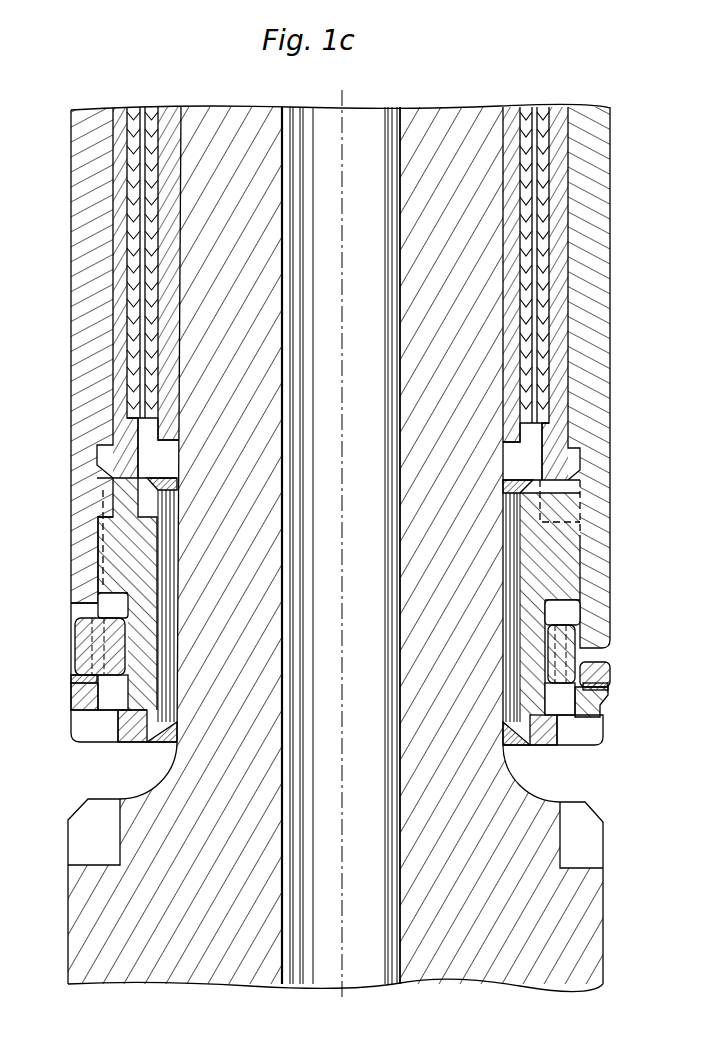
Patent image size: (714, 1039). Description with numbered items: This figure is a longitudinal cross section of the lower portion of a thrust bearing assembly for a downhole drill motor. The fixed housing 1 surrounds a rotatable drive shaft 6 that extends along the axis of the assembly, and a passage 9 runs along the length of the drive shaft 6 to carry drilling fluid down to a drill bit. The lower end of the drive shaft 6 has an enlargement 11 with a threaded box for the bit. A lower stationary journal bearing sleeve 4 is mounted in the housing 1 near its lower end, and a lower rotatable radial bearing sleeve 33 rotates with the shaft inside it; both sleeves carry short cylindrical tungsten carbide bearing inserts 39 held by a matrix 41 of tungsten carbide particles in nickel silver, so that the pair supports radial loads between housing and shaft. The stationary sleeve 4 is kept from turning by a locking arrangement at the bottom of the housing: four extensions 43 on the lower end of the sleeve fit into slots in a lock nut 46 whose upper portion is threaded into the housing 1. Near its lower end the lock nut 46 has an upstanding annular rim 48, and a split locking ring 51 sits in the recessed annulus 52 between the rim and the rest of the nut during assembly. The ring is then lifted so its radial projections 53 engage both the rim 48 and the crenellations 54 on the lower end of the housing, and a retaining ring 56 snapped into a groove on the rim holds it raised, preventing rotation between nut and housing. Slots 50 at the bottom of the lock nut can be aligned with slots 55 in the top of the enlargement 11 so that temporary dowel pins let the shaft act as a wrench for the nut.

The fixed housing 1 is at (356, 377).
The lower stationary journal bearing sleeve 4 is at (599, 357).
The rotatable drive shaft 6 is at (473, 112).
The passage 9 is at (375, 768).
The enlargement 11 is at (590, 901).
The lower rotatable radial bearing sleeve 33 is at (178, 134).
The bearing inserts 39 is at (157, 380).
The matrix 41 is at (522, 300).
The extensions 43 is at (122, 490).
The lock nut 46 is at (525, 548).
The upstanding annular rim 48 is at (612, 674).
The slots 50 is at (90, 740).
The split locking ring 51 is at (118, 640).
The recessed annulus 52 is at (520, 700).
The radial projections 53 is at (80, 648).
The crenellations 54 is at (585, 637).
The slots 55 is at (90, 818).
The retaining ring 56 is at (605, 690).